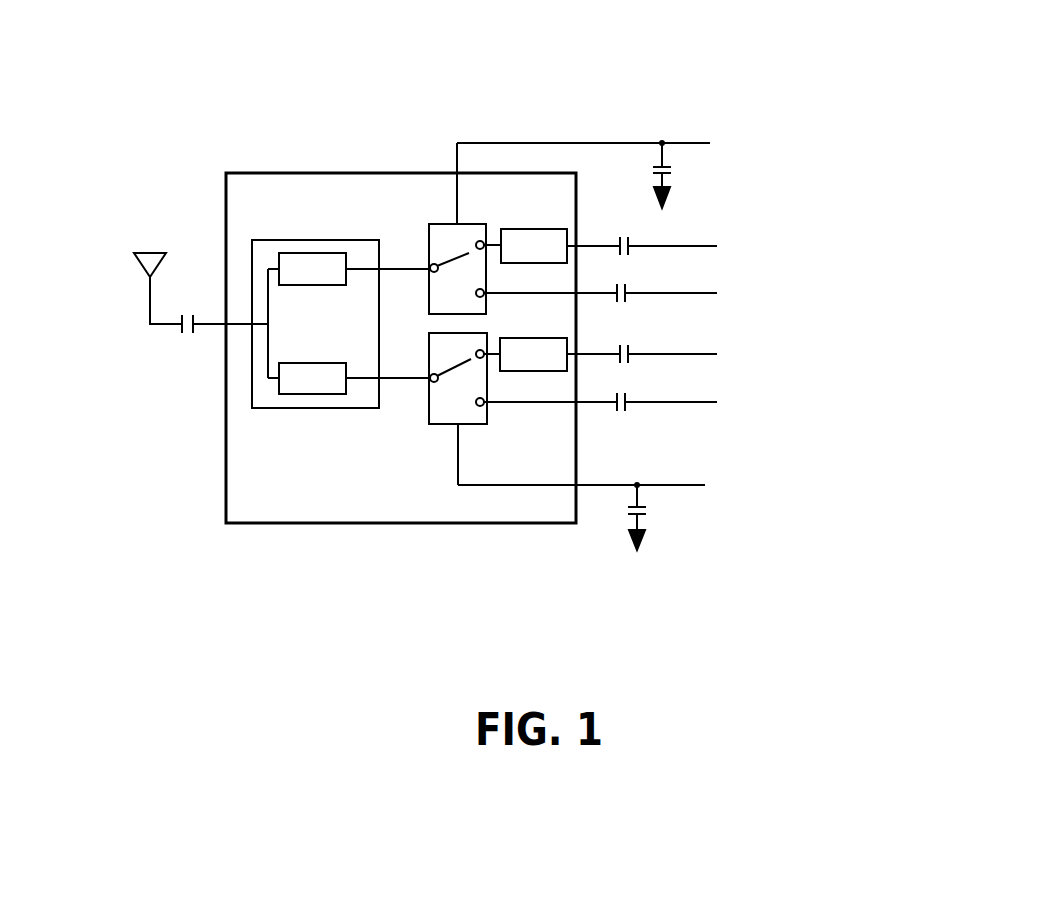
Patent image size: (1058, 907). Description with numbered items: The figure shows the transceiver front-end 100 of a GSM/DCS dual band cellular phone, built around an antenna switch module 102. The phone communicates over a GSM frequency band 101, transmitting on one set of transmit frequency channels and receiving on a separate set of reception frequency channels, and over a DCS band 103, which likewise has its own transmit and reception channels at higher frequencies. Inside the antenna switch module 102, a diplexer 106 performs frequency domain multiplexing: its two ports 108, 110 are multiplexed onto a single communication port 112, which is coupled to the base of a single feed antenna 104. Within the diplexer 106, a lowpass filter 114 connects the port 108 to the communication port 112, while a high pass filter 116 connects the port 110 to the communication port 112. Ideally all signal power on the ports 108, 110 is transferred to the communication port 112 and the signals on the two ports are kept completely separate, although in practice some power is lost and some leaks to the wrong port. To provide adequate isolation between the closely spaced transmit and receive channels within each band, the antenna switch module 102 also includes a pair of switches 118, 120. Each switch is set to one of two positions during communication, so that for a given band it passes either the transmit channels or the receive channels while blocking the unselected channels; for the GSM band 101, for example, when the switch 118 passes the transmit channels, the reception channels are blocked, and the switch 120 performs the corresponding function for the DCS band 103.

The front-end 100 is at (765, 45).
The GSM frequency band 101 is at (799, 369).
The antenna switch module 102 is at (400, 173).
The DCS band 103 is at (799, 258).
The single feed antenna 104 is at (133, 225).
The diplexer 106 is at (315, 240).
The port 108 is at (402, 380).
The port 110 is at (403, 268).
The communication port 112 is at (208, 328).
The lowpass filter 114 is at (313, 363).
The high pass filter 116 is at (313, 285).
The switch 118 is at (466, 424).
The switch 120 is at (466, 224).